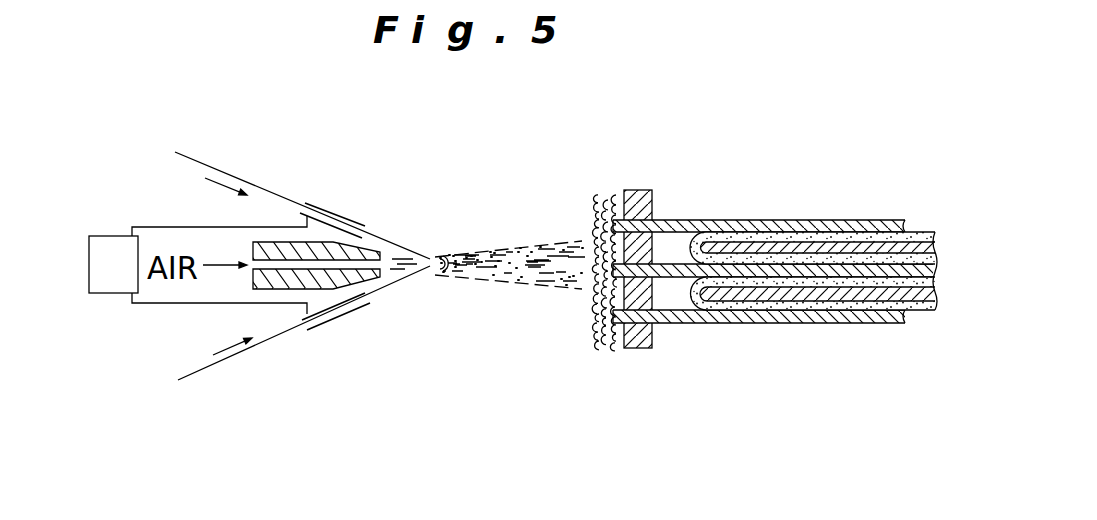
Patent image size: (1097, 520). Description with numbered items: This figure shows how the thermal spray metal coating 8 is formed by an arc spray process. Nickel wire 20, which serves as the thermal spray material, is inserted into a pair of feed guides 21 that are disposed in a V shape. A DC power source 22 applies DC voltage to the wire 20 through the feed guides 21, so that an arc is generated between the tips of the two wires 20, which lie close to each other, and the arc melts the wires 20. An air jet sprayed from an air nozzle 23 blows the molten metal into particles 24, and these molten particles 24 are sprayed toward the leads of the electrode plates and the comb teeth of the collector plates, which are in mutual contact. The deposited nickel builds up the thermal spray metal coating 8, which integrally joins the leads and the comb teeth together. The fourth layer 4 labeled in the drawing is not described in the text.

The nickel wire 20 is at (208, 165).
The feed guides 21 is at (329, 208).
The DC power source 22 is at (108, 245).
The air nozzle 23 is at (262, 274).
The particles 24 is at (485, 279).
The thermal spray metal coating 8 is at (597, 312).
The filler layer 4 is at (937, 303).